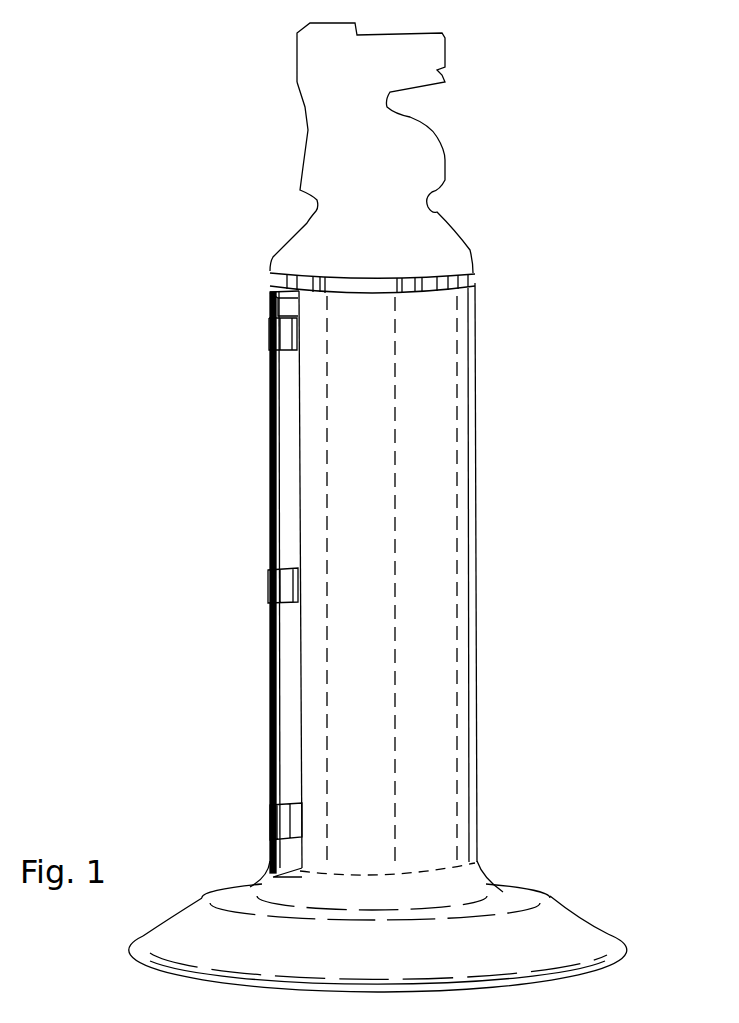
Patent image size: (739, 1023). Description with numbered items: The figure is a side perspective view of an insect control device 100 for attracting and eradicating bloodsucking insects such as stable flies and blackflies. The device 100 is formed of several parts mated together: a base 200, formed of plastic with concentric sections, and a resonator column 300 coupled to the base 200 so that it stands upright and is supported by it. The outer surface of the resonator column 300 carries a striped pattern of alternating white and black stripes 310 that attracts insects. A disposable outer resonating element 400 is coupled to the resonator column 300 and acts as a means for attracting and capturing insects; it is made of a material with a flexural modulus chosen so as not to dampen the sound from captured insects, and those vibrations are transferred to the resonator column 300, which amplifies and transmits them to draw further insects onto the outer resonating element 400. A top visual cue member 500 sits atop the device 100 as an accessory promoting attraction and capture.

The insect control device 100 is at (512, 457).
The base 200 is at (571, 878).
The resonator column 300 is at (468, 282).
The stripes 310 is at (310, 283).
The outer resonating element 400 is at (247, 463).
The top visual cue member 500 is at (367, 157).